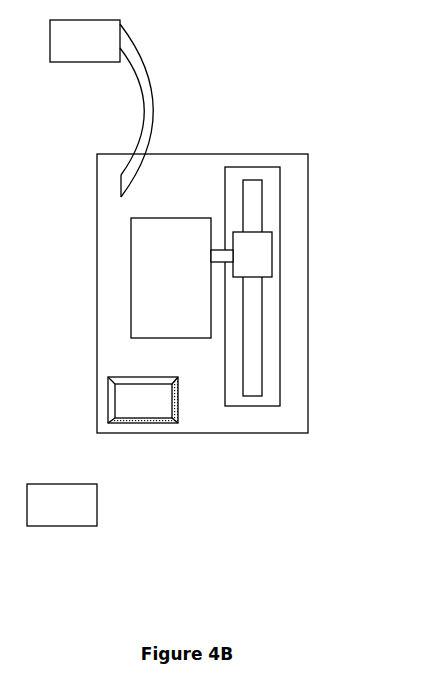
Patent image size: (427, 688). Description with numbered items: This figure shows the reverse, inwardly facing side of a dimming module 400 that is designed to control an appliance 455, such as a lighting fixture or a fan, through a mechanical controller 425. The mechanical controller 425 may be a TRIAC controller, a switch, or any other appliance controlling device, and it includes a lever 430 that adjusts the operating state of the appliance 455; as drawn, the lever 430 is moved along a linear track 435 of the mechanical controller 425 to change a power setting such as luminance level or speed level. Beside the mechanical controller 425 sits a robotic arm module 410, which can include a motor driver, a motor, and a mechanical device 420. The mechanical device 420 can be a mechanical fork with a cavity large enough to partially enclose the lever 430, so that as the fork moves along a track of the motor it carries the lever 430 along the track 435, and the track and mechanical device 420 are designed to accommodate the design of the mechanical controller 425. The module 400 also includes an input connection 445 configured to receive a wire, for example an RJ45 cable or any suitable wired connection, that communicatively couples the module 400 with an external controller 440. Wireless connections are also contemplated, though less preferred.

The dimming module 400 is at (287, 105).
The robotic arm module 410 is at (171, 278).
The mechanical device 420 is at (223, 247).
The mechanical controller 425 is at (282, 338).
The lever 430 is at (252, 254).
The track 435 is at (264, 195).
The controller 440 is at (130, 422).
The input connection 445 is at (143, 400).
The appliance 455 is at (101, 108).